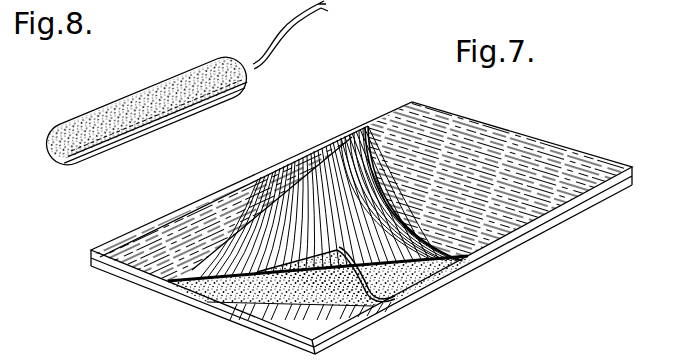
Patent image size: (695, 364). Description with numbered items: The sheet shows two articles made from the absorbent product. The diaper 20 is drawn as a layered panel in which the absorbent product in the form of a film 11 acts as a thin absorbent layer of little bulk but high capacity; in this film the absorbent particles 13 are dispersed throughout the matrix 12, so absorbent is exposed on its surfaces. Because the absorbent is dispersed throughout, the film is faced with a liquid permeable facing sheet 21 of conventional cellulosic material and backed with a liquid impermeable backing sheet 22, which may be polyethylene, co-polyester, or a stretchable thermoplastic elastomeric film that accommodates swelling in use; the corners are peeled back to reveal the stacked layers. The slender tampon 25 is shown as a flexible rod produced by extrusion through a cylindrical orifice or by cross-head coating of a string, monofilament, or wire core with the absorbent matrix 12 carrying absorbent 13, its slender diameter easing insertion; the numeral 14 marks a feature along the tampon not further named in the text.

In FIG. 7, the film 11 is at (190, 298).
In FIG. 8, the matrix 12 is at (89, 133).
In FIG. 7, the matrix 12 is at (428, 283).
In FIG. 8, the absorbent particles 13 is at (200, 90).
In FIG. 7, the absorbent particles 13 is at (400, 302).
In FIG. 8, the seam 14 is at (88, 158).
In FIG. 7, the diaper 20 is at (562, 112).
In FIG. 7, the liquid permeable facing sheet 21 is at (193, 207).
In FIG. 7, the liquid impermeable backing sheet 22 is at (280, 327).
In FIG. 8, the tampon 25 is at (166, 62).